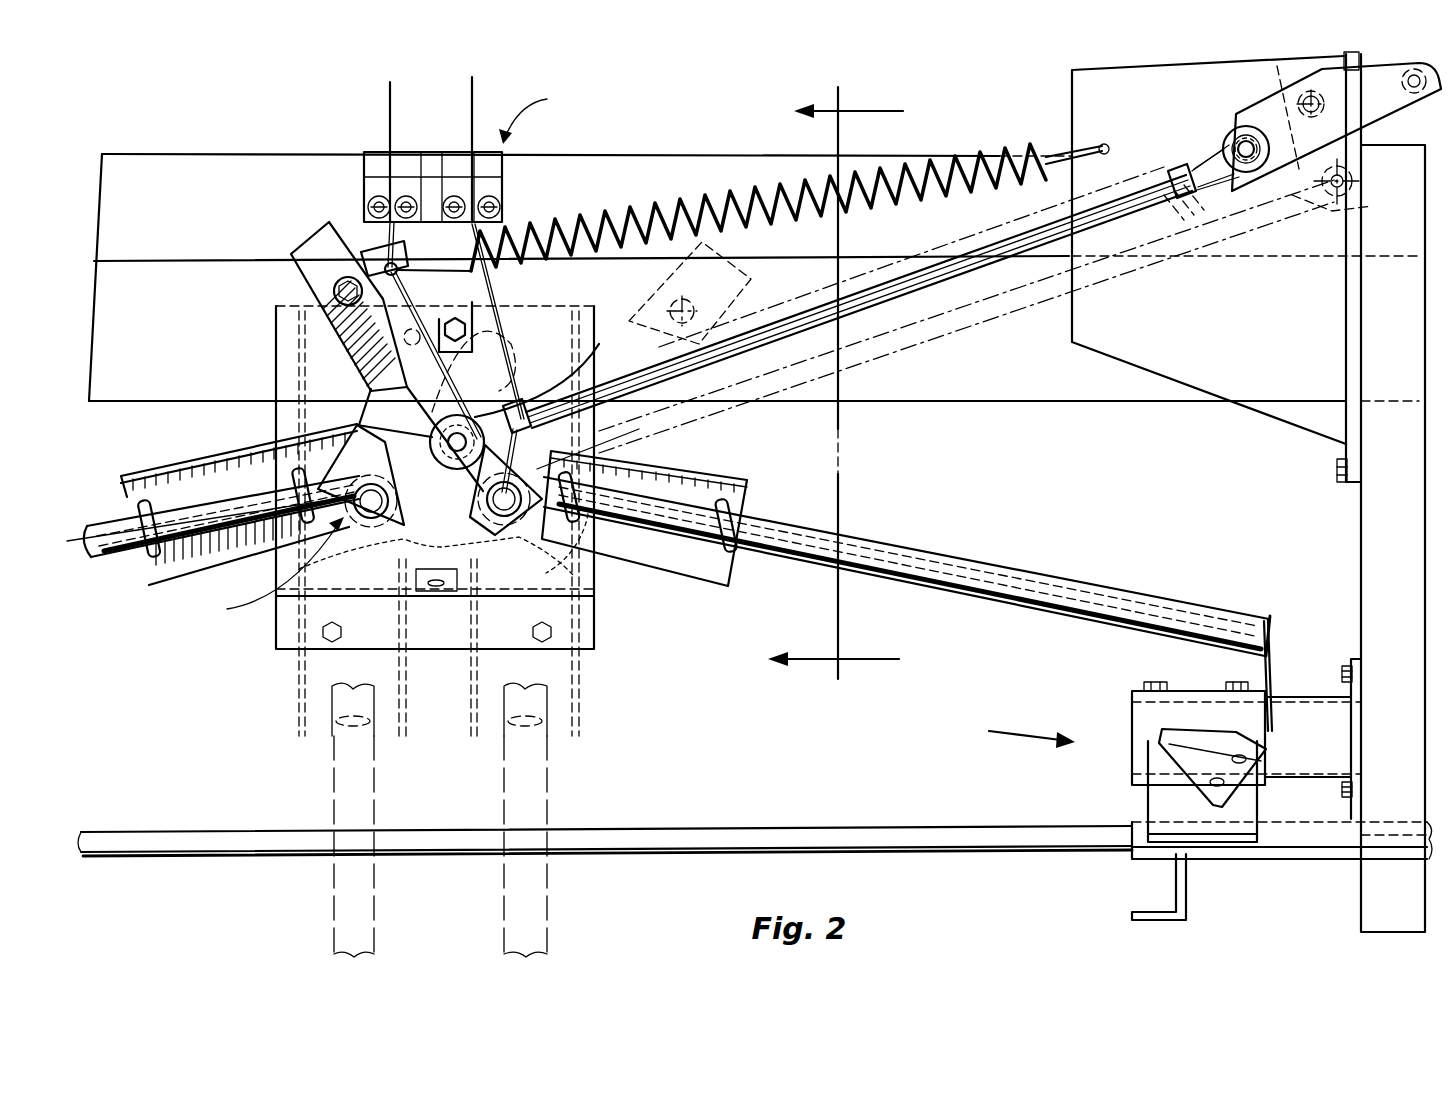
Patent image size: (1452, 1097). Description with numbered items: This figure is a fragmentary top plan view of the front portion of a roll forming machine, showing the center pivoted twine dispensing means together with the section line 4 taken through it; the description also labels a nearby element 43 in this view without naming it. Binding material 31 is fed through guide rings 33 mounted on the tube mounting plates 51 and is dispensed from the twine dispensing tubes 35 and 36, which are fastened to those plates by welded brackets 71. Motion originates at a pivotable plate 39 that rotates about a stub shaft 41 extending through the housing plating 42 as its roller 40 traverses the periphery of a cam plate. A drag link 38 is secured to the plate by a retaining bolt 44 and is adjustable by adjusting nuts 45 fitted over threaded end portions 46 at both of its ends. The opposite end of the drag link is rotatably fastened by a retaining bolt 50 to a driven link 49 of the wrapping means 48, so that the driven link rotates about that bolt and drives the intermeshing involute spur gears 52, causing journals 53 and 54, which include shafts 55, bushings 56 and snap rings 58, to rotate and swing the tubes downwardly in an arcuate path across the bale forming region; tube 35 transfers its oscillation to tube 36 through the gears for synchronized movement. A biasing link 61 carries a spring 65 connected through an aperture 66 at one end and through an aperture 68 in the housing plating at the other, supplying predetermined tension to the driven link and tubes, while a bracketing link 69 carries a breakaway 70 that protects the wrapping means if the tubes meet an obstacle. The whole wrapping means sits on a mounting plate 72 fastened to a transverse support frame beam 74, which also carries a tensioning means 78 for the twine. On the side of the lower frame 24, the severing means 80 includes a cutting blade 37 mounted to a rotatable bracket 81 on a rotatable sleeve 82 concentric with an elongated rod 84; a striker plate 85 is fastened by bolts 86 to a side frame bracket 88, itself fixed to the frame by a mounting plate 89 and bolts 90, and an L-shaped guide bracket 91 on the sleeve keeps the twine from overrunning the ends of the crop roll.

The section line 4- 4 is at (849, 383).
The lower frame 24 is at (1362, 575).
The binding material 31 is at (473, 133).
The guide rings 33 is at (358, 428).
The twine dispensing tube 35 is at (950, 553).
The twine dispensing tube 36 is at (118, 527).
The cutting blades 37 is at (1163, 735).
The drag link 38 is at (967, 278).
The pivotable plate 39 is at (1375, 118).
The roller 40 is at (1403, 92).
The stub shaft 41 is at (1302, 112).
The housing plating 42 is at (1073, 88).
The cam 43 is at (508, 360).
The retaining bolt 44 is at (1232, 140).
The adjusting nuts 45 is at (1172, 170).
The threaded end portions 46 is at (601, 343).
The wrapping means 48 is at (335, 337).
The driven link 49 is at (327, 333).
The retaining bolt 50 is at (372, 385).
The tube mounting plates 51 is at (232, 462).
The intermeshing involute spur gears 52 is at (290, 590).
The journal 53 is at (618, 447).
The journal 54 is at (269, 570).
The shafts 55 is at (385, 480).
The bushings 56 is at (583, 540).
The snap rings 58 is at (358, 497).
The biasing link 61 is at (380, 250).
The spring 65 is at (607, 220).
The aperture 66 is at (385, 235).
The aperture 68 is at (1098, 150).
The bracketing link 69 is at (336, 282).
The breakaway 70 is at (360, 258).
The welded brackets 71 is at (225, 565).
The mounting plate 72 is at (278, 323).
The transverse support frame beam 74 is at (126, 157).
The tensioning means 78 is at (536, 111).
The severing means 80 is at (1007, 733).
The rotatable brackets 81 is at (1145, 800).
The rotatable sleeves 82 is at (1293, 862).
The elongated rod 84 is at (945, 828).
The striker plate 85 is at (1130, 713).
The bolts 86 is at (1160, 683).
The side frame bracket 88 is at (1312, 780).
The mounting plate 89 is at (1357, 660).
The bolts 90 is at (1343, 680).
The L-shaped guide bracket 91 is at (1187, 903).